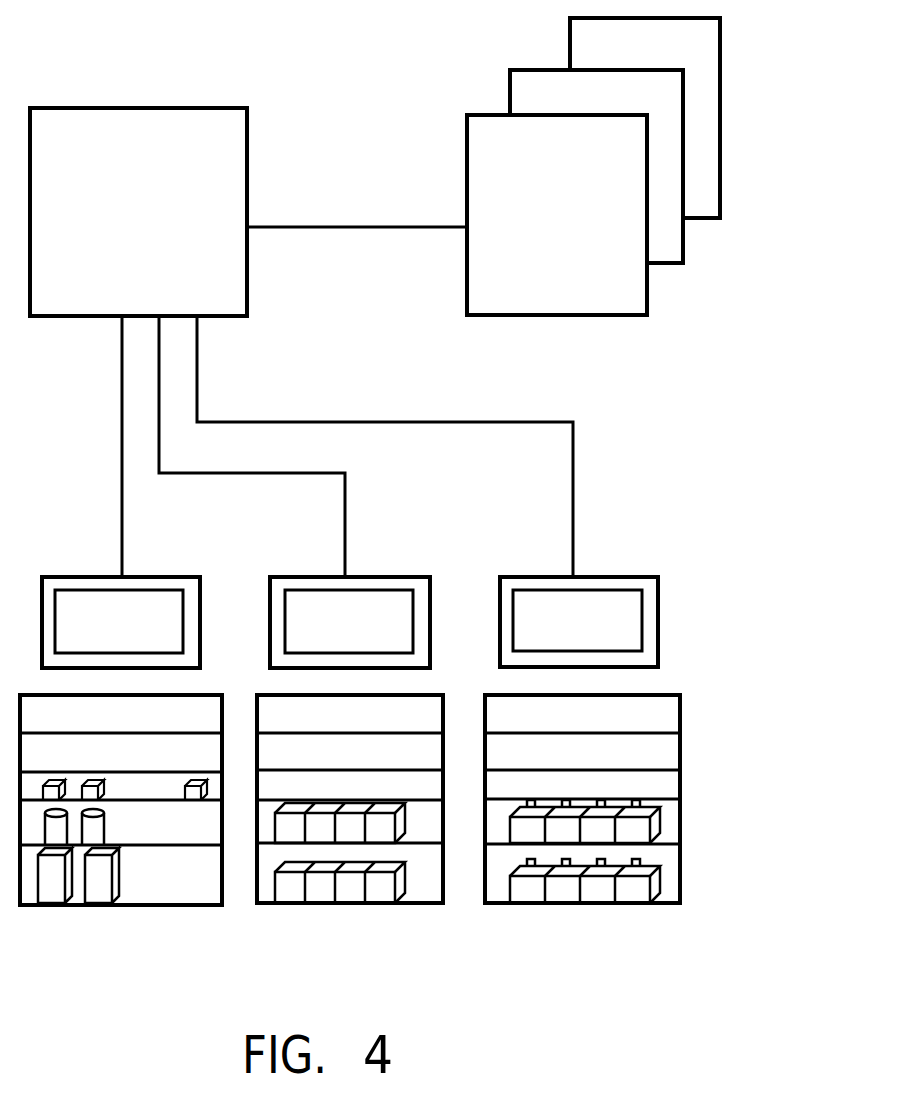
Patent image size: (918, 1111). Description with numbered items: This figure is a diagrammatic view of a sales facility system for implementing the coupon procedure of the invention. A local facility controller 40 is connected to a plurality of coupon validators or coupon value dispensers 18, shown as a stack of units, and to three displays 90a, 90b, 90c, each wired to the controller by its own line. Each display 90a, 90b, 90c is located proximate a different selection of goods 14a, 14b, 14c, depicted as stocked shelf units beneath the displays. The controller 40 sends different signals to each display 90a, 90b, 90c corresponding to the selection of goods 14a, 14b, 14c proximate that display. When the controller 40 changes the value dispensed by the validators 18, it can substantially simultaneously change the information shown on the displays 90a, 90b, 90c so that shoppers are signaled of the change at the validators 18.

The local facility controller 40 is at (165, 108).
The coupon validator 18 is at (722, 168).
The display 90a is at (87, 577).
The display 90b is at (316, 577).
The display 90c is at (535, 577).
The selection of goods 14a is at (105, 820).
The selection of goods 14b is at (318, 888).
The selection of goods 14c is at (570, 888).